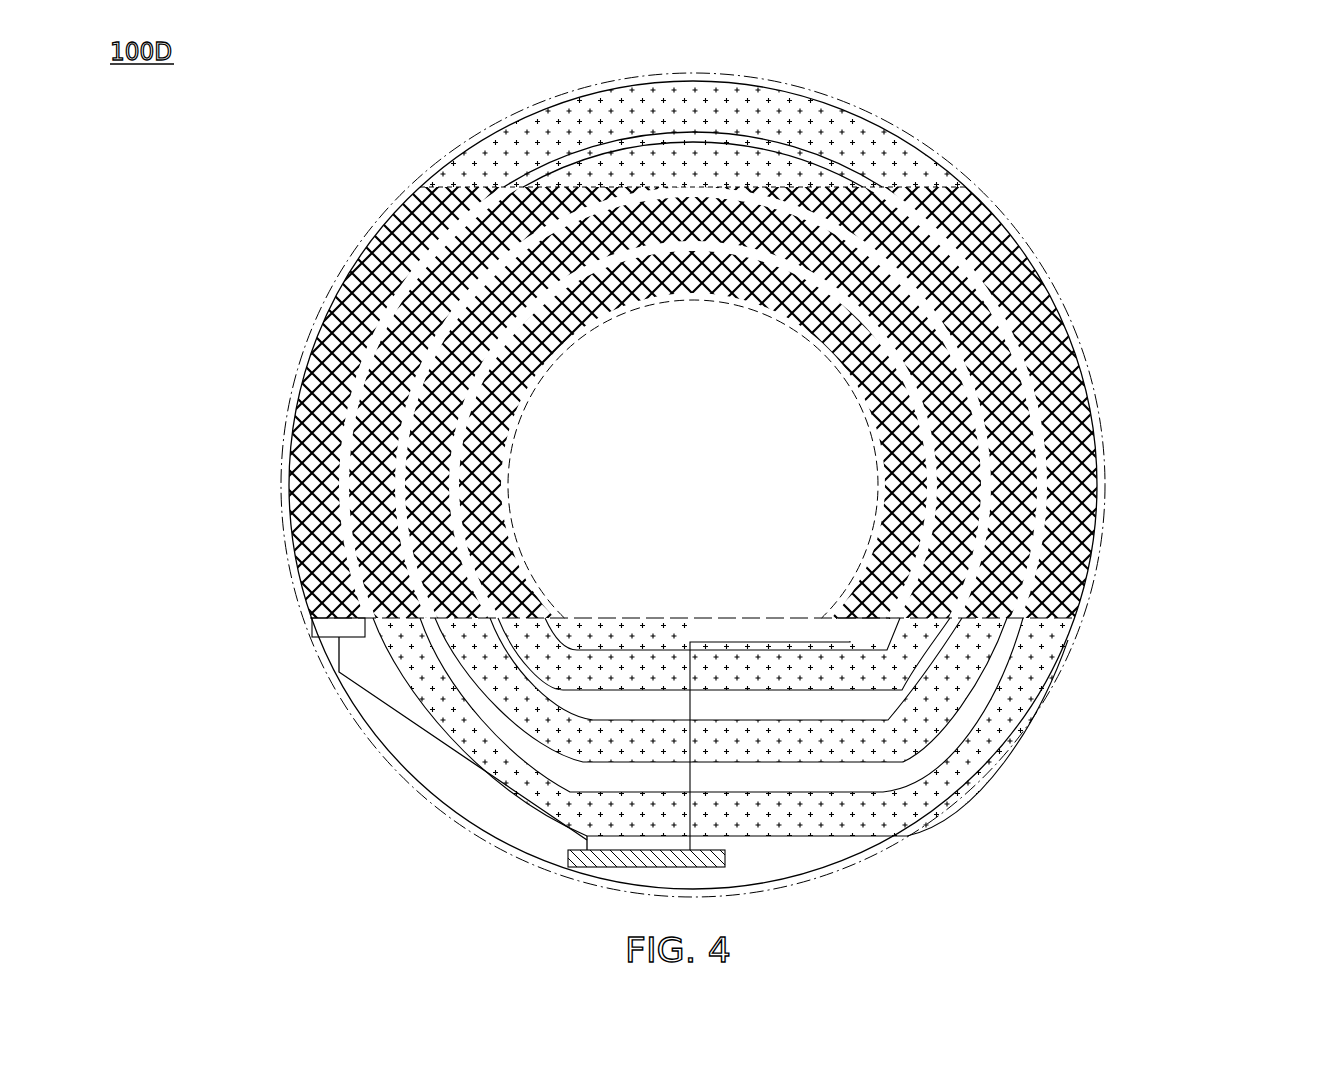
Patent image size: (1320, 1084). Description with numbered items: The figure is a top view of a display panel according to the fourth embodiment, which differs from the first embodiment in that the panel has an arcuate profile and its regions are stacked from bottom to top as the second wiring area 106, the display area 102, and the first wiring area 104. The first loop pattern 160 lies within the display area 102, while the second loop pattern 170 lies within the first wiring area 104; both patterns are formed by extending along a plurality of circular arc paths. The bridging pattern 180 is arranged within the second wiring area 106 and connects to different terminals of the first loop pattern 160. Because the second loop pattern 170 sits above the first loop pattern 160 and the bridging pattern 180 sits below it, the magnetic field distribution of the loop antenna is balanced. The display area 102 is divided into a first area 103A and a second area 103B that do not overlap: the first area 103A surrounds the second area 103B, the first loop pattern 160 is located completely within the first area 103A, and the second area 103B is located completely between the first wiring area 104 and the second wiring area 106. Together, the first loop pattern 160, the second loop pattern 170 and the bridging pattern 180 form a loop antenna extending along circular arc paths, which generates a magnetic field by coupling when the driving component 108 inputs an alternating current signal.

The display area 102 is at (1014, 221).
The first area 103A is at (1040, 259).
The second area 103B is at (808, 486).
The first wiring area 104 is at (450, 150).
The second wiring area 106 is at (326, 685).
The driving component 108 is at (575, 855).
The first loop pattern 160 is at (1050, 299).
The second loop pattern 170 is at (513, 105).
The bridging pattern 180 is at (809, 843).